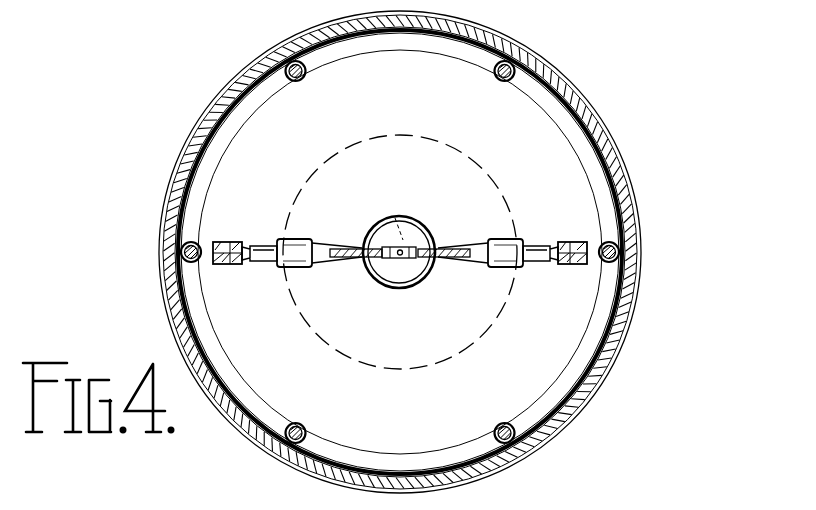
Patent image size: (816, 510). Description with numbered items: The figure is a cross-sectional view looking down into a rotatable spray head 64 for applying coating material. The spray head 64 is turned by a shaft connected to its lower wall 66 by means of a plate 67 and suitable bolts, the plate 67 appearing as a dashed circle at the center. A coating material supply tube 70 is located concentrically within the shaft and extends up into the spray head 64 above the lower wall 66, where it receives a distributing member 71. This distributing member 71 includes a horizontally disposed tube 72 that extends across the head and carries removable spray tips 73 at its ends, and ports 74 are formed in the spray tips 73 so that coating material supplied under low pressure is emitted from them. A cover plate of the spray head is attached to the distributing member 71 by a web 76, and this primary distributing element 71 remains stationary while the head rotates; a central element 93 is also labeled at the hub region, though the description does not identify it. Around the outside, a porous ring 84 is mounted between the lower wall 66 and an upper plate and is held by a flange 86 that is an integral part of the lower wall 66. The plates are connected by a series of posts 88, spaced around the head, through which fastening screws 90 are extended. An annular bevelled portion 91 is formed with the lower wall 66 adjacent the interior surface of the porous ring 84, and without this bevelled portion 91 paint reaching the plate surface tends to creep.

The spray head 64 is at (170, 178).
The lower wall 66 is at (542, 130).
The plate 67 is at (429, 368).
The coating material supply tube 70 is at (402, 218).
The distributing member 71 is at (438, 249).
The horizontally disposed tube 72 is at (355, 267).
The removable spray tips 73 is at (246, 266).
The ports 74 is at (222, 266).
The web 76 is at (365, 248).
The porous ring 84 is at (641, 216).
The flange 86 is at (620, 160).
The posts 88 is at (184, 261).
The fastening screws 90 is at (185, 249).
The annular bevelled portion 91 is at (585, 356).
The hub 93 is at (399, 288).